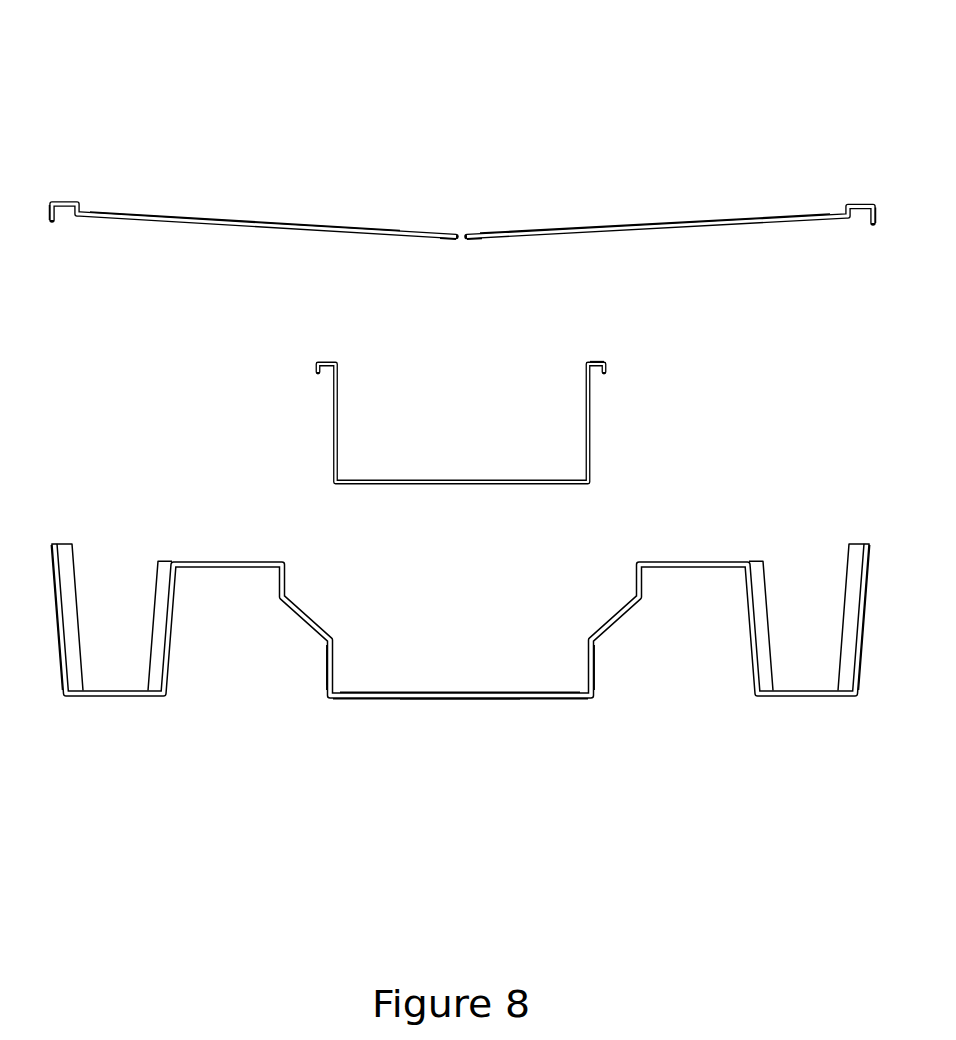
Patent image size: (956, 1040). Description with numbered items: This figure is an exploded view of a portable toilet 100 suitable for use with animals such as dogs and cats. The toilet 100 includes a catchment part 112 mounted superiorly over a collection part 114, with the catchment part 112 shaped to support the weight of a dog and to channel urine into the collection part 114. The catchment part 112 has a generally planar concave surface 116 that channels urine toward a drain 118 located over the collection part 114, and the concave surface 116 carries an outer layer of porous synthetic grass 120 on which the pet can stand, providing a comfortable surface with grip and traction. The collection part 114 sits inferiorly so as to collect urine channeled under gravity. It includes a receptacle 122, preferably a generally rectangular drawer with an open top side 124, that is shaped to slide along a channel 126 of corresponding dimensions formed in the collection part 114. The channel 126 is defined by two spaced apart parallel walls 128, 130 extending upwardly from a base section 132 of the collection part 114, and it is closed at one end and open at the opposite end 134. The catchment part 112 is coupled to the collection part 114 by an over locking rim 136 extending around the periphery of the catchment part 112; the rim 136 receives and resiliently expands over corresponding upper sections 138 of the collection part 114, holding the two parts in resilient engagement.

The portable toilet 100 is at (113, 708).
The catchment part 112 is at (153, 228).
The collection part 114 is at (535, 699).
The concave surface 116 is at (230, 212).
The drain 118 is at (461, 220).
The layer of porous synthetic grass 120 is at (693, 220).
The receptacle 122 is at (600, 454).
The open top side 124 is at (605, 360).
The channel 126 is at (333, 659).
The wall 128 is at (327, 673).
The wall 130 is at (592, 662).
The base section 132 is at (490, 692).
The open end 134 is at (468, 699).
The over locking rim 136 is at (58, 199).
The upper sections 138 is at (62, 543).